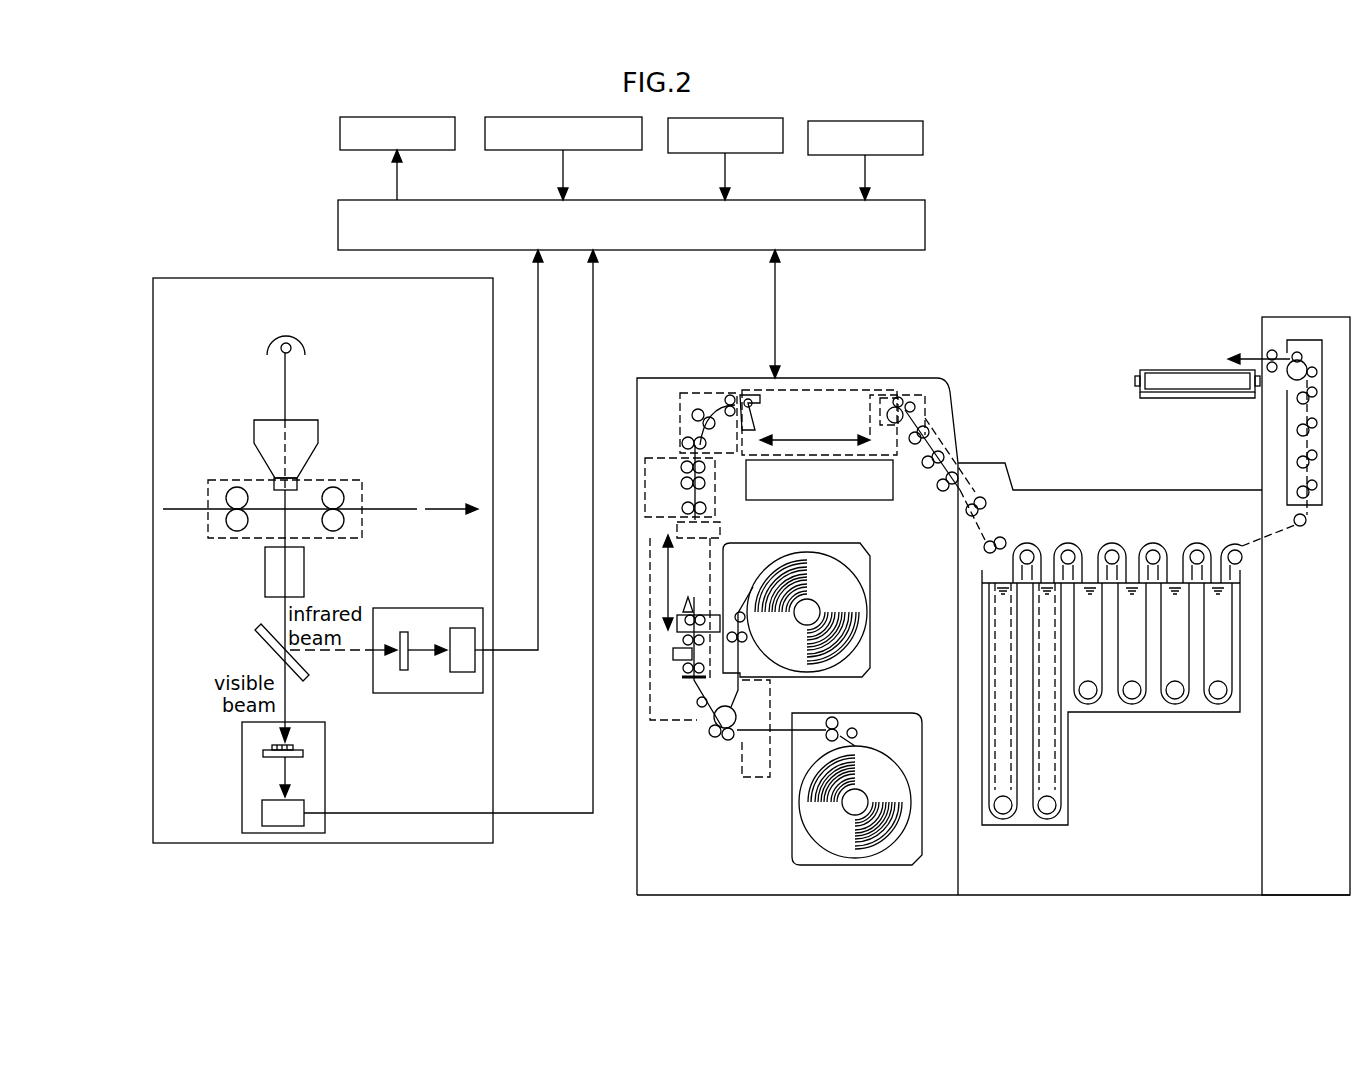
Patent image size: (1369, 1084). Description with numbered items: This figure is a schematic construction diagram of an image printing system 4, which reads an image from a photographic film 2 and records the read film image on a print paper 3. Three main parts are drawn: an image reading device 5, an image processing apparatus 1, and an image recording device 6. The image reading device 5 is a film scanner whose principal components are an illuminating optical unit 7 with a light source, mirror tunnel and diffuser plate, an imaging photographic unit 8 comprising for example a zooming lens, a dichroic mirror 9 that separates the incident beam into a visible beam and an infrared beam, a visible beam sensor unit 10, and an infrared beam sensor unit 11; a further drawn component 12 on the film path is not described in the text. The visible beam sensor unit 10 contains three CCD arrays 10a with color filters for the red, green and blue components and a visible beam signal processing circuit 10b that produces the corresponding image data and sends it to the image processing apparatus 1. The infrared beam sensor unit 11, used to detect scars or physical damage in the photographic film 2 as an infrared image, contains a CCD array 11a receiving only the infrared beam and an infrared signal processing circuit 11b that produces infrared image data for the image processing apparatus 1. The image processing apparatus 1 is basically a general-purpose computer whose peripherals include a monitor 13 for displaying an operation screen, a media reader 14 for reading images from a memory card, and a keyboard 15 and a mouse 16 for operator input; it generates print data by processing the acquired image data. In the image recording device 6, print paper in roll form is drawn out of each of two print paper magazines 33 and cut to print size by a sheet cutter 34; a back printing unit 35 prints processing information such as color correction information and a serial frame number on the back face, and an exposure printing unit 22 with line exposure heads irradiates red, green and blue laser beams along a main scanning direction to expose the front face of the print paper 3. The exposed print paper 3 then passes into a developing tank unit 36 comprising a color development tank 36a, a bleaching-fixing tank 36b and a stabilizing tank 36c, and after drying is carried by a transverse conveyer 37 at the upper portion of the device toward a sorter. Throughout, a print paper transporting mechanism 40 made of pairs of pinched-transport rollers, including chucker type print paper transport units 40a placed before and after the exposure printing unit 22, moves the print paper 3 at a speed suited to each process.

The image processing apparatus 1 is at (338, 222).
The photographic film 2 is at (392, 509).
The print paper 3 is at (713, 405).
The image printing system 4 is at (1152, 176).
The image reading device 5 is at (262, 278).
The image recording device 6 is at (986, 318).
The illuminating optical unit 7 is at (305, 348).
The imaging photographic unit 8 is at (265, 580).
The dichroic mirror 9 is at (257, 632).
The visible beam sensor unit 10 is at (285, 773).
The CCD arrays 10a is at (263, 750).
The visible beam signal processing circuit 10b is at (262, 805).
The infrared beam sensor unit 11 is at (433, 659).
The CCD array 11a is at (398, 652).
The infrared signal processing circuit 11b is at (468, 665).
The light source housing 12 is at (237, 480).
The monitor 13 is at (340, 130).
The media reader 14 is at (485, 130).
The keyboard 15 is at (755, 118).
The mouse 16 is at (923, 138).
The exposure printing unit 22 is at (840, 490).
The print paper magazines 33 is at (870, 650).
The sheet cutter 34 is at (680, 680).
The back printing unit 35 is at (672, 655).
The developing tank unit 36 is at (1138, 704).
The color development tank 36a is at (1008, 822).
The bleaching-fixing tank 36b is at (1060, 817).
The stabilizing tank 36c is at (1088, 702).
The transverse conveyer 37 is at (1157, 372).
The print paper transporting mechanism 40 is at (688, 404).
The print paper transport units 40a is at (833, 388).